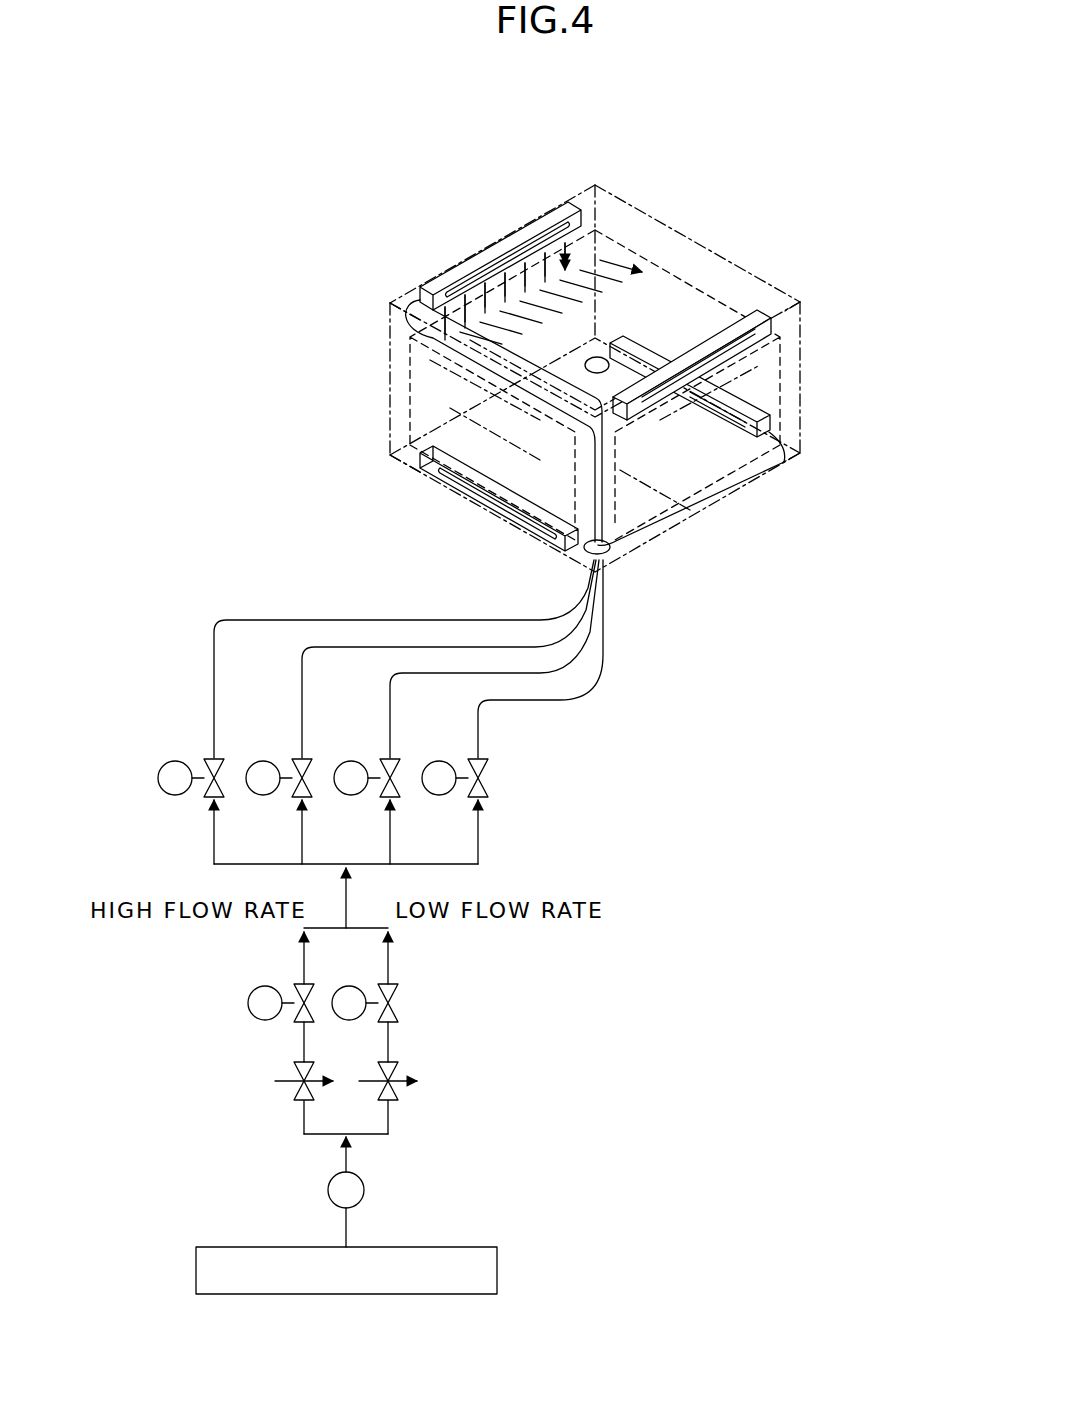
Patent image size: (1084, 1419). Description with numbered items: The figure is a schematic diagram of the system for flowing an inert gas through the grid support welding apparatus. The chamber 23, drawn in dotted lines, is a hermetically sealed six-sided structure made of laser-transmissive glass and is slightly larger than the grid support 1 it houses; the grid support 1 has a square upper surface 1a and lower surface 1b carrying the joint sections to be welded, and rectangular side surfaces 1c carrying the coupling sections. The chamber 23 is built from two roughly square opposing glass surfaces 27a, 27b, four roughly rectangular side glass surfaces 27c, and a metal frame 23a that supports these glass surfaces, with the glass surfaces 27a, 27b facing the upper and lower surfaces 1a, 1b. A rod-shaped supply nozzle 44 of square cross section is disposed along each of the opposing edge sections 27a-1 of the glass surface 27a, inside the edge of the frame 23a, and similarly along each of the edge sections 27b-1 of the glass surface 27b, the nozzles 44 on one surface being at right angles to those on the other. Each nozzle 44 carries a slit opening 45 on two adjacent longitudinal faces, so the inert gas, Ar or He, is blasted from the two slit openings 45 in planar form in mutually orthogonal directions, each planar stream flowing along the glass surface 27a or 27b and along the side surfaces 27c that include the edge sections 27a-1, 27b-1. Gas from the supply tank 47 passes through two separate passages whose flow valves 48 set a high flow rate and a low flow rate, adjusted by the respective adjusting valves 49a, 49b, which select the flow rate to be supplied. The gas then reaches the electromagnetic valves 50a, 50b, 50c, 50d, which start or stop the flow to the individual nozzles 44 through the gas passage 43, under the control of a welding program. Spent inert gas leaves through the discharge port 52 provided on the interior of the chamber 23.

The grid support 1 is at (748, 470).
The upper surface 1a is at (651, 262).
The lower surface 1b is at (648, 473).
The side surfaces 1c is at (450, 408).
The chamber 23 is at (740, 265).
The frame 23a is at (595, 182).
The glass surface 27a is at (692, 257).
The edge sections 27a-1 is at (405, 300).
The glass surface 27b is at (703, 492).
The edge sections 27b-1 is at (402, 470).
The side glass surfaces 27c is at (400, 428).
The gas passage 43 is at (586, 726).
The supply nozzle 44 is at (507, 242).
The slit opening 45 is at (497, 497).
The supply tank 47 is at (466, 1245).
The flow valves 48 is at (293, 1091).
The adjusting valve 49a is at (294, 992).
The adjusting valve 49b is at (397, 995).
The electromagnetic valve 50a is at (207, 755).
The electromagnetic valve 50b is at (295, 755).
The electromagnetic valve 50c is at (384, 755).
The electromagnetic valve 50d is at (472, 755).
The discharge port 52 is at (600, 360).